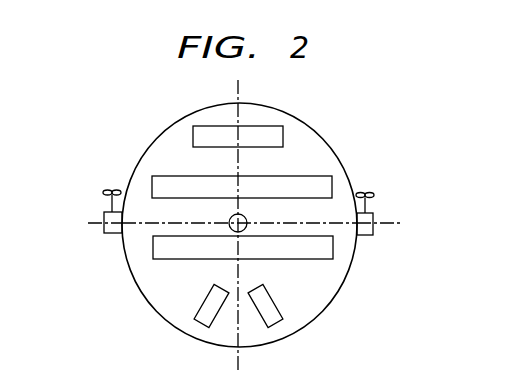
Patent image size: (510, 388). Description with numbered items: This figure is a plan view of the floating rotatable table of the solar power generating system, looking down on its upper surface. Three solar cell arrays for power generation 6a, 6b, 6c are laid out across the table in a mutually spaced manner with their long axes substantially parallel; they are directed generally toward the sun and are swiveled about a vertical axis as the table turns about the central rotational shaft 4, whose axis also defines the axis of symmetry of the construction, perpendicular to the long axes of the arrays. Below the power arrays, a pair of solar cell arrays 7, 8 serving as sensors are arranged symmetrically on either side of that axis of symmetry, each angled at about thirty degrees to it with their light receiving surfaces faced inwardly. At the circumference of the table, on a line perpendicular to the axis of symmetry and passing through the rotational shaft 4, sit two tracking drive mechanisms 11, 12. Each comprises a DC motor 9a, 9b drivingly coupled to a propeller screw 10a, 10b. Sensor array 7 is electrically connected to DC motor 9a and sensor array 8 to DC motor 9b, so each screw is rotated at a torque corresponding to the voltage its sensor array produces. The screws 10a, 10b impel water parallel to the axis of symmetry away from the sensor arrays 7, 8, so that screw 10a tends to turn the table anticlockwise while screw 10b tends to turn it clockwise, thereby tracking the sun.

The rotational shaft 4 is at (230, 228).
The solar cell array for power generation 6a is at (273, 133).
The solar cell array for power generation 6b is at (322, 182).
The solar cell array for power generation 6c is at (325, 250).
The solar cell array serving as sensor 7 is at (203, 317).
The solar cell array serving as sensor 8 is at (273, 318).
The DC motor 9a is at (115, 233).
The DC motor 9b is at (365, 235).
The propeller screw 10a is at (108, 190).
The propeller screw 10b is at (368, 192).
The tracking drive mechanism 11 is at (103, 237).
The tracking drive mechanism 12 is at (380, 217).